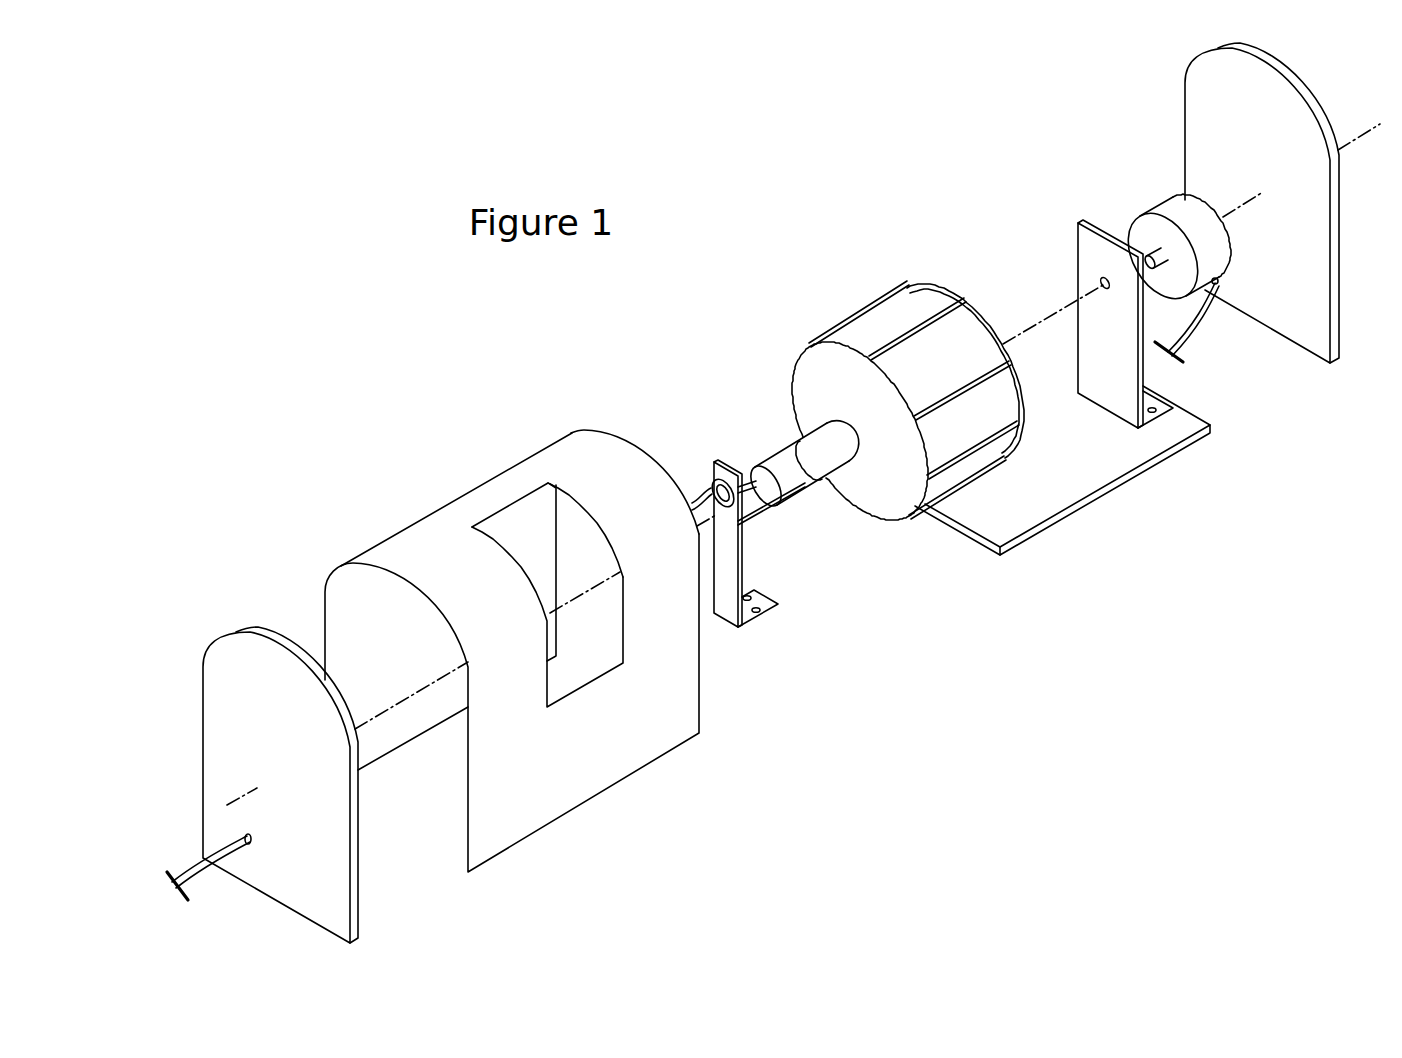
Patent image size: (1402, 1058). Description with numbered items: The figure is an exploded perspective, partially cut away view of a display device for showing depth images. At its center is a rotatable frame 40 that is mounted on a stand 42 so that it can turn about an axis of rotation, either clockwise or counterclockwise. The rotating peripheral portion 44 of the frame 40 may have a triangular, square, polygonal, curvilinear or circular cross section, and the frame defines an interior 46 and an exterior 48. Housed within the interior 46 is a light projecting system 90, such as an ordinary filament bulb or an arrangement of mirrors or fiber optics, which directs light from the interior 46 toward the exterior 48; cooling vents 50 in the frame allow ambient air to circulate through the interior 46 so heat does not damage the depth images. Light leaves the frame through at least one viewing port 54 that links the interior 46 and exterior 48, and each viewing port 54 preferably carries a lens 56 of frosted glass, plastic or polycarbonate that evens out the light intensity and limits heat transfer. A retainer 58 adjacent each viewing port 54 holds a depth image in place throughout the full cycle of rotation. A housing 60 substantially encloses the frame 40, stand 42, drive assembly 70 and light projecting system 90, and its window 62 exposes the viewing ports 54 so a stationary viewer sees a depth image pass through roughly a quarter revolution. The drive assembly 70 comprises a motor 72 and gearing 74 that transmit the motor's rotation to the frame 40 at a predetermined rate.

The rotatable frame 40 is at (914, 282).
The stand 42 is at (1097, 455).
The peripheral portion 44 is at (803, 348).
The interior 46 is at (863, 494).
The exterior 48 is at (778, 294).
The cooling vents 50 is at (790, 383).
The viewing port 54 is at (943, 462).
The lens 56 is at (921, 373).
The retainer 58 is at (860, 310).
The housing 60 is at (492, 485).
The window 62 is at (622, 612).
The drive assembly 70 is at (1197, 200).
The motor 72 is at (1167, 212).
The gearing 74 is at (1137, 232).
The light projecting system 90 is at (820, 487).